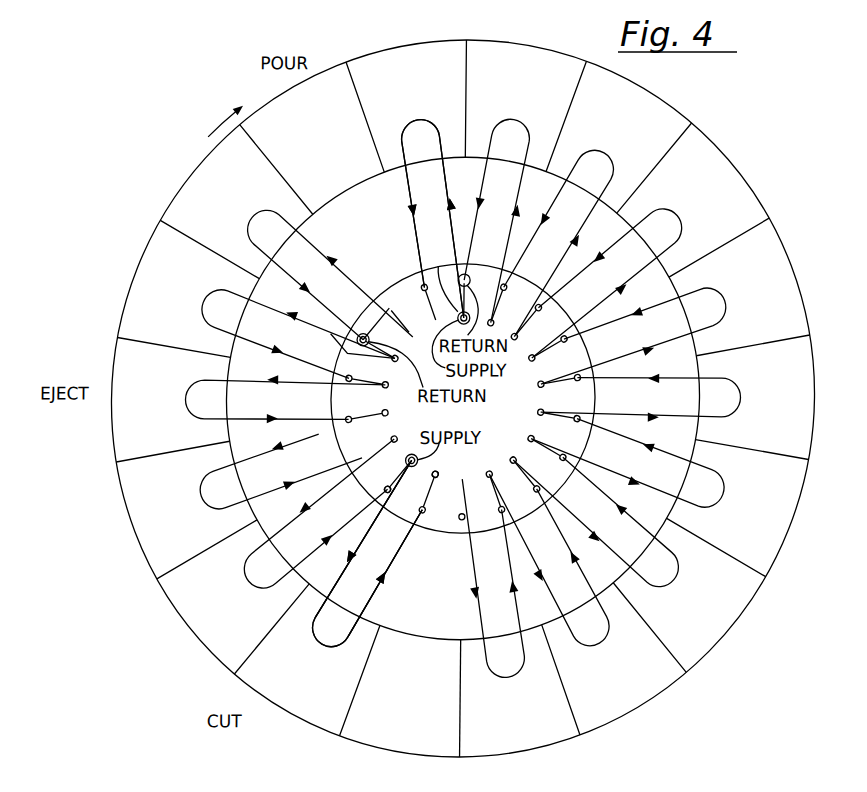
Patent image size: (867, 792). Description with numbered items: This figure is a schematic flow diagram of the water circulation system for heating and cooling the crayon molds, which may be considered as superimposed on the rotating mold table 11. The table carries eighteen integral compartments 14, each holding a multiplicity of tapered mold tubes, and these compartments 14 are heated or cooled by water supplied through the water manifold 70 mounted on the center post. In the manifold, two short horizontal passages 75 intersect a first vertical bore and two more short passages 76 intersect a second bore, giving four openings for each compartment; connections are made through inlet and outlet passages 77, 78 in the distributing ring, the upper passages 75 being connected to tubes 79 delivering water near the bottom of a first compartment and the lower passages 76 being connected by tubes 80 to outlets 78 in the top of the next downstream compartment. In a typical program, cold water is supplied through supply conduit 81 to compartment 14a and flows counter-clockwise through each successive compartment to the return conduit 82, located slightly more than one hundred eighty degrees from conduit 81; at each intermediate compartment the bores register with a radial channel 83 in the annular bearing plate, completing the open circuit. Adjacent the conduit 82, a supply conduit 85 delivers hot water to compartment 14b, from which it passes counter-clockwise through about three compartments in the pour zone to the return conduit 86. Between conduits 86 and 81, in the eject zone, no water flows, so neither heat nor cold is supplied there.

The mold table 11 is at (463, 399).
The compartments 14 is at (463, 399).
The compartment 14a is at (356, 573).
The compartment 14b is at (433, 198).
The water manifold 70 is at (492, 398).
The short horizontal passages 75 is at (387, 520).
The short passages 76 is at (445, 543).
The inlet passage 77 is at (351, 549).
The outlet passage 78 is at (379, 596).
The tubes 79 is at (337, 569).
The tubes 80 is at (391, 589).
The supply conduit 81 is at (404, 462).
The return conduit 82 is at (480, 284).
The radial channel 83 is at (458, 465).
The supply conduit 85 is at (446, 300).
The return conduit 86 is at (377, 348).